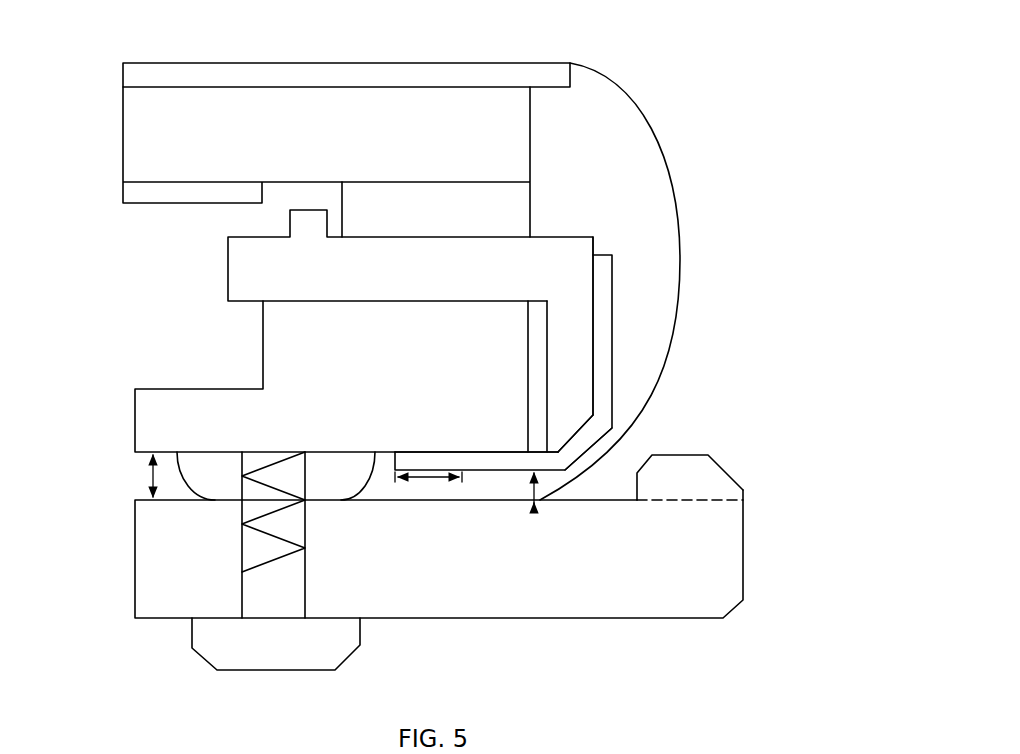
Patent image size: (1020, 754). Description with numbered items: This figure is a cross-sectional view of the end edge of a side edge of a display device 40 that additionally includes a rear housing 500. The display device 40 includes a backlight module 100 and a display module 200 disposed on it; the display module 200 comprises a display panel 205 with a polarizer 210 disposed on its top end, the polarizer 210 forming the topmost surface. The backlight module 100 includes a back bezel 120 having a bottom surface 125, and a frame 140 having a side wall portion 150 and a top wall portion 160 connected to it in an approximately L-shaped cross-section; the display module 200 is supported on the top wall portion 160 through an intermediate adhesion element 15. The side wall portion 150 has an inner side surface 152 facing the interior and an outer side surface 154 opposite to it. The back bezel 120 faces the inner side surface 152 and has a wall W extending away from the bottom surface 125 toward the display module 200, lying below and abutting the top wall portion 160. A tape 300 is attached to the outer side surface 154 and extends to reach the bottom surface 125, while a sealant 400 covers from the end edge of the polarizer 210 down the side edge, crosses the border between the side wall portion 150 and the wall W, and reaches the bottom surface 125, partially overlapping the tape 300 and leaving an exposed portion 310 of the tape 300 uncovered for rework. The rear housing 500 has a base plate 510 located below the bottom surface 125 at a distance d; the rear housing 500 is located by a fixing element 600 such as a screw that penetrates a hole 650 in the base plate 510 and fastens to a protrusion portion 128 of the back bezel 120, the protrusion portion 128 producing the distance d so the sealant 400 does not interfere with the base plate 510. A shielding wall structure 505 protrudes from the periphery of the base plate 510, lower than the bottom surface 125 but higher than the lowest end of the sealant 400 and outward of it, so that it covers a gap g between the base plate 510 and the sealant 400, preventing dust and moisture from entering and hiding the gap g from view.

The display device 40 is at (60, 28).
The display module 200 is at (104, 64).
The polarizer 210 is at (547, 74).
The display panel 205 is at (368, 145).
The sealant 400 is at (558, 168).
The intermediate adhesion element 15 is at (413, 222).
The backlight module 100 is at (100, 210).
The top wall portion 160 is at (343, 286).
The wall W is at (378, 406).
The frame 140 is at (573, 307).
The side wall portion 150 is at (548, 369).
The inner side surface 152 is at (545, 416).
The outer side surface 154 is at (597, 321).
The tape 300 is at (583, 440).
The exposed portion 310 is at (428, 489).
The distance d is at (163, 476).
The back bezel 120 is at (147, 428).
The protrusion portion 128 is at (207, 480).
The hole 650 is at (292, 584).
The bottom surface 125 is at (517, 456).
The rear housing 500 is at (728, 583).
The base plate 510 is at (581, 579).
The shielding wall structure 505 is at (661, 494).
The gap g is at (537, 500).
The fixing element 600 is at (212, 636).